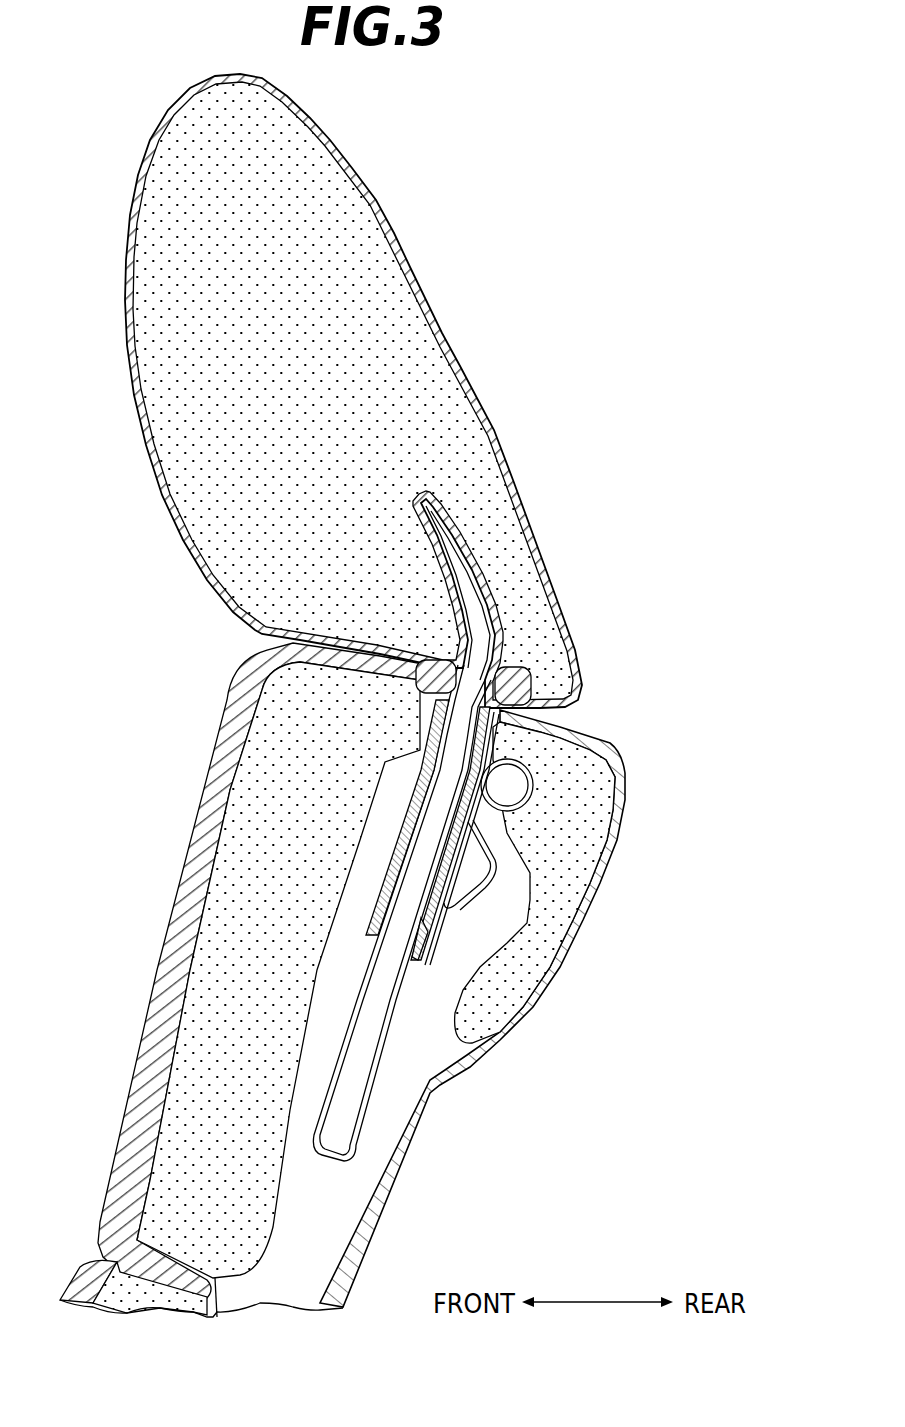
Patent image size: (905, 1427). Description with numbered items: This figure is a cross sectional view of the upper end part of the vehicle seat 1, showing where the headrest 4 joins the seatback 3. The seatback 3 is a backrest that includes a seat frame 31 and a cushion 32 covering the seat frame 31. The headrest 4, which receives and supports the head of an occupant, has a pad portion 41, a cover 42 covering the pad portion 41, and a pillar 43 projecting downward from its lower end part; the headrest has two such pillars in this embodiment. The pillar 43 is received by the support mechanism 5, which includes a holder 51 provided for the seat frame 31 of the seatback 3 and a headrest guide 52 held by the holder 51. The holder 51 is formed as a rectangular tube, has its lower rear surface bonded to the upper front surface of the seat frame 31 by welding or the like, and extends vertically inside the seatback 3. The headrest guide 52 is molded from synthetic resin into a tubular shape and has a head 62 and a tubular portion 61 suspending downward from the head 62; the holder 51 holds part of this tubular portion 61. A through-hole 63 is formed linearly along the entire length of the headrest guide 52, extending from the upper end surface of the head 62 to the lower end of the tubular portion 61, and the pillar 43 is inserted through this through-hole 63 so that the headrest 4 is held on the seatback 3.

The vehicle seat 1 is at (553, 244).
The seatback 3 is at (386, 980).
The headrest 4 is at (321, 391).
The support mechanism 5 is at (402, 876).
The seat frame 31 is at (487, 883).
The cushion 32 is at (227, 1025).
The pad portion 41 is at (147, 287).
The cover 42 is at (134, 389).
The pillar 43 is at (472, 557).
The holder 51 is at (378, 885).
The headrest guide 52 is at (533, 690).
The tubular portion 61 is at (415, 923).
The head 62 is at (520, 677).
The through-hole 63 is at (415, 950).